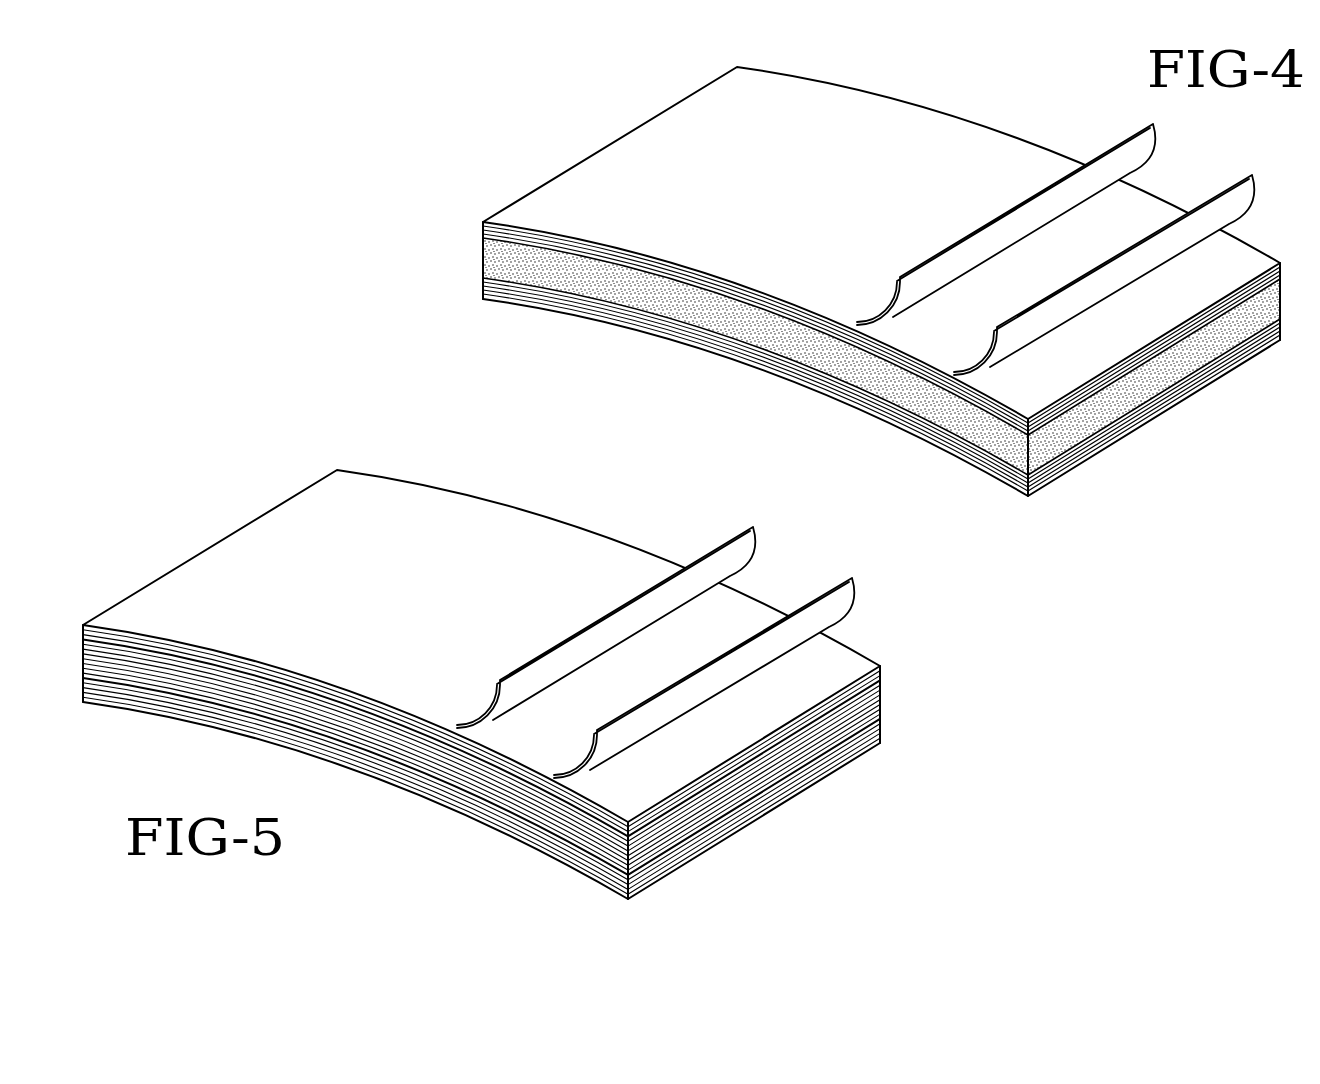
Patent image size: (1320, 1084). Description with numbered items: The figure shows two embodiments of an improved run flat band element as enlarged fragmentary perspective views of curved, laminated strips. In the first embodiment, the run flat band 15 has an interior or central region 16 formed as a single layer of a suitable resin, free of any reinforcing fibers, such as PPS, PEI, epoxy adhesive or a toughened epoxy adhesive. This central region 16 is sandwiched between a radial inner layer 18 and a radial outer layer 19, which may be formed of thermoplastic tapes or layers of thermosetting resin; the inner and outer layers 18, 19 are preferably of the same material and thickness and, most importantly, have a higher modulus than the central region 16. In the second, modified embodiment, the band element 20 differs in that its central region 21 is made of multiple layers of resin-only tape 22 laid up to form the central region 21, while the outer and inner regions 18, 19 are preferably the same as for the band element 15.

In FIG. 4, the run flat band 15 is at (846, 286).
In FIG. 4, the central region 16 is at (490, 262).
In FIG. 4, the radial inner layer 18 is at (924, 437).
In FIG. 4, the radial outer layer 19 is at (667, 150).
In FIG. 5, the band element 20 is at (534, 684).
In FIG. 5, the central region 21 is at (888, 690).
In FIG. 5, the resin-only tape 22 is at (883, 713).